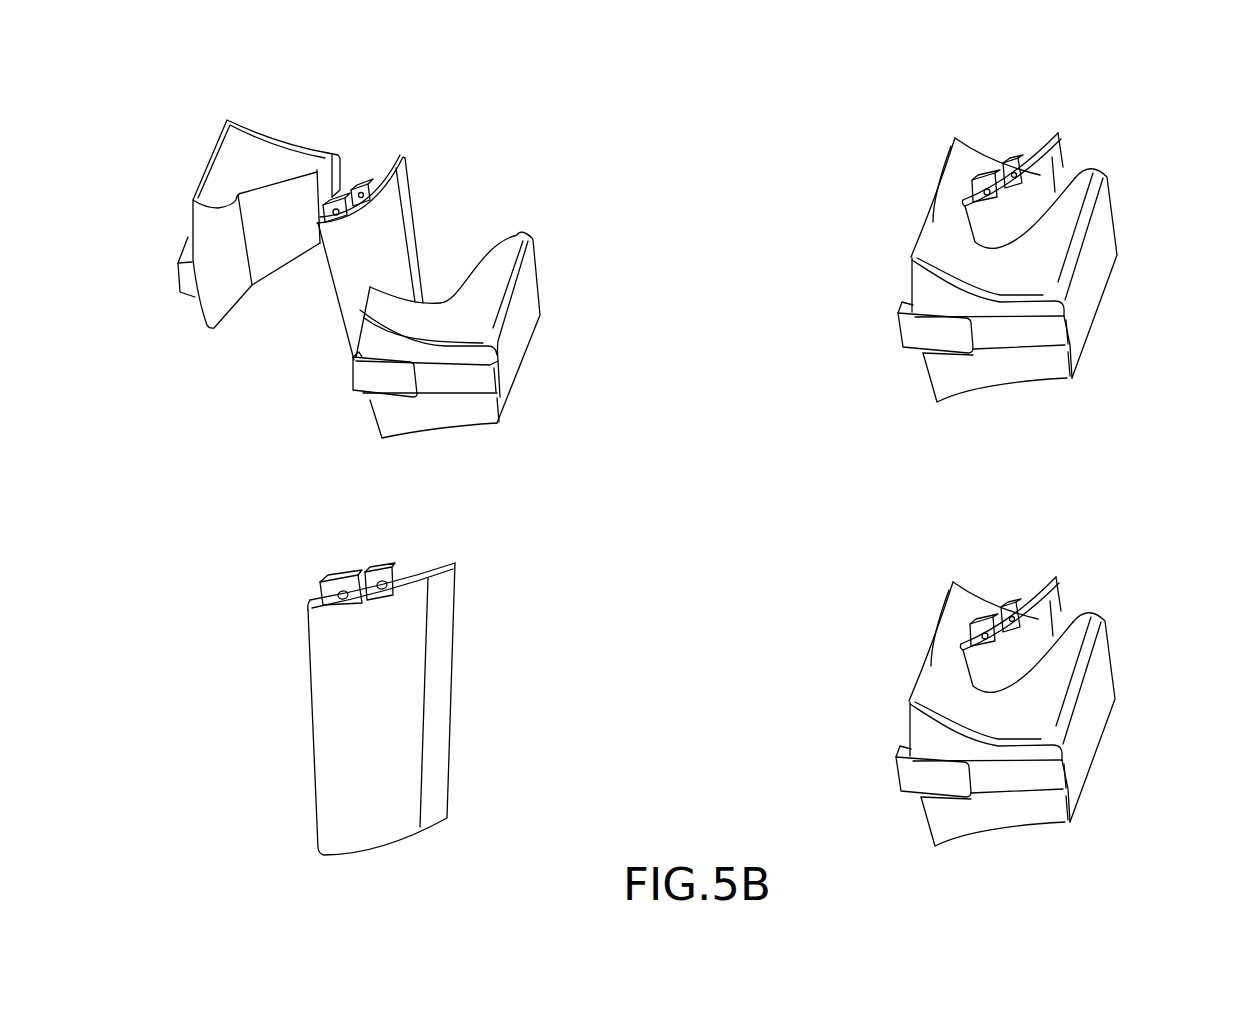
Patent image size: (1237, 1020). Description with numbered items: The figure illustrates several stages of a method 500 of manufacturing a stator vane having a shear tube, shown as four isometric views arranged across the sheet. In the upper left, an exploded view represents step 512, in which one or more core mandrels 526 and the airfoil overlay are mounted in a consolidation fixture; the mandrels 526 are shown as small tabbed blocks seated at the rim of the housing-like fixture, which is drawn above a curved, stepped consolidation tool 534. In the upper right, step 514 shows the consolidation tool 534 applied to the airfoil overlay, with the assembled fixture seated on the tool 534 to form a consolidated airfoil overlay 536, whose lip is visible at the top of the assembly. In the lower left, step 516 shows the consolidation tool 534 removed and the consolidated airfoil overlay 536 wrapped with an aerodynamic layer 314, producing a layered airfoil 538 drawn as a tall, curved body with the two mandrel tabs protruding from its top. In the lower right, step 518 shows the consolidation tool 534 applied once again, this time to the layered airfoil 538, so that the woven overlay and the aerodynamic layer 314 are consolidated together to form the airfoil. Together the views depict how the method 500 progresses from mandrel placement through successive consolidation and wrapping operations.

The method 500 is at (957, 92).
The step 512 is at (480, 160).
The step 514 is at (1188, 118).
The step 516 is at (487, 537).
The step 518 is at (1110, 552).
The core mandrels 526 is at (359, 183).
The consolidation tool 534 is at (530, 268).
The consolidated airfoil overlay 536 is at (1060, 151).
The aerodynamic layer 314 is at (446, 657).
The layered airfoil 538 is at (490, 722).